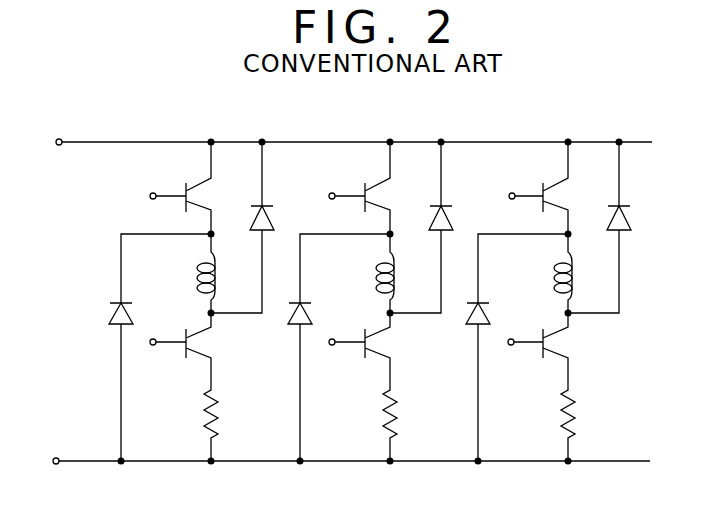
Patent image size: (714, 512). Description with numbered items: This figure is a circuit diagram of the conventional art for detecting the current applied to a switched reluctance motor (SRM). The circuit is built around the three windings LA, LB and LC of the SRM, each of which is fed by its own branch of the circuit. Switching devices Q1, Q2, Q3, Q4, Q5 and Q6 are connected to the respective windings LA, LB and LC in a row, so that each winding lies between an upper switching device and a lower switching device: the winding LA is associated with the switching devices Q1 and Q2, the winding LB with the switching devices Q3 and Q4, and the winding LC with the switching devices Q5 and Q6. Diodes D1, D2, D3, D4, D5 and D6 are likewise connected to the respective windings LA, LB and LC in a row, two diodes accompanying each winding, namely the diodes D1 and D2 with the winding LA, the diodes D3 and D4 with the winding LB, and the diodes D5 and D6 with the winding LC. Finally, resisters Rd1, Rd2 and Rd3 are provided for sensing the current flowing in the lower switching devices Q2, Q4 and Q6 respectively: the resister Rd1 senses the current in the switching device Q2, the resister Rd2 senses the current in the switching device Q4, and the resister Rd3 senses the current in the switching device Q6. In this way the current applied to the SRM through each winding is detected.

The switching device Q1 is at (195, 188).
The switching device Q2 is at (195, 350).
The switching device Q3 is at (374, 188).
The switching device Q4 is at (374, 350).
The switching device Q5 is at (554, 188).
The switching device Q6 is at (554, 350).
The diode D1 is at (160, 347).
The diode D2 is at (259, 227).
The diode D3 is at (339, 347).
The diode D4 is at (439, 227).
The diode D5 is at (517, 347).
The diode D6 is at (617, 227).
The winding LA is at (223, 273).
The winding LB is at (401, 273).
The winding LC is at (580, 273).
The resister Rd1 is at (188, 424).
The resister Rd2 is at (367, 424).
The resister Rd3 is at (546, 424).